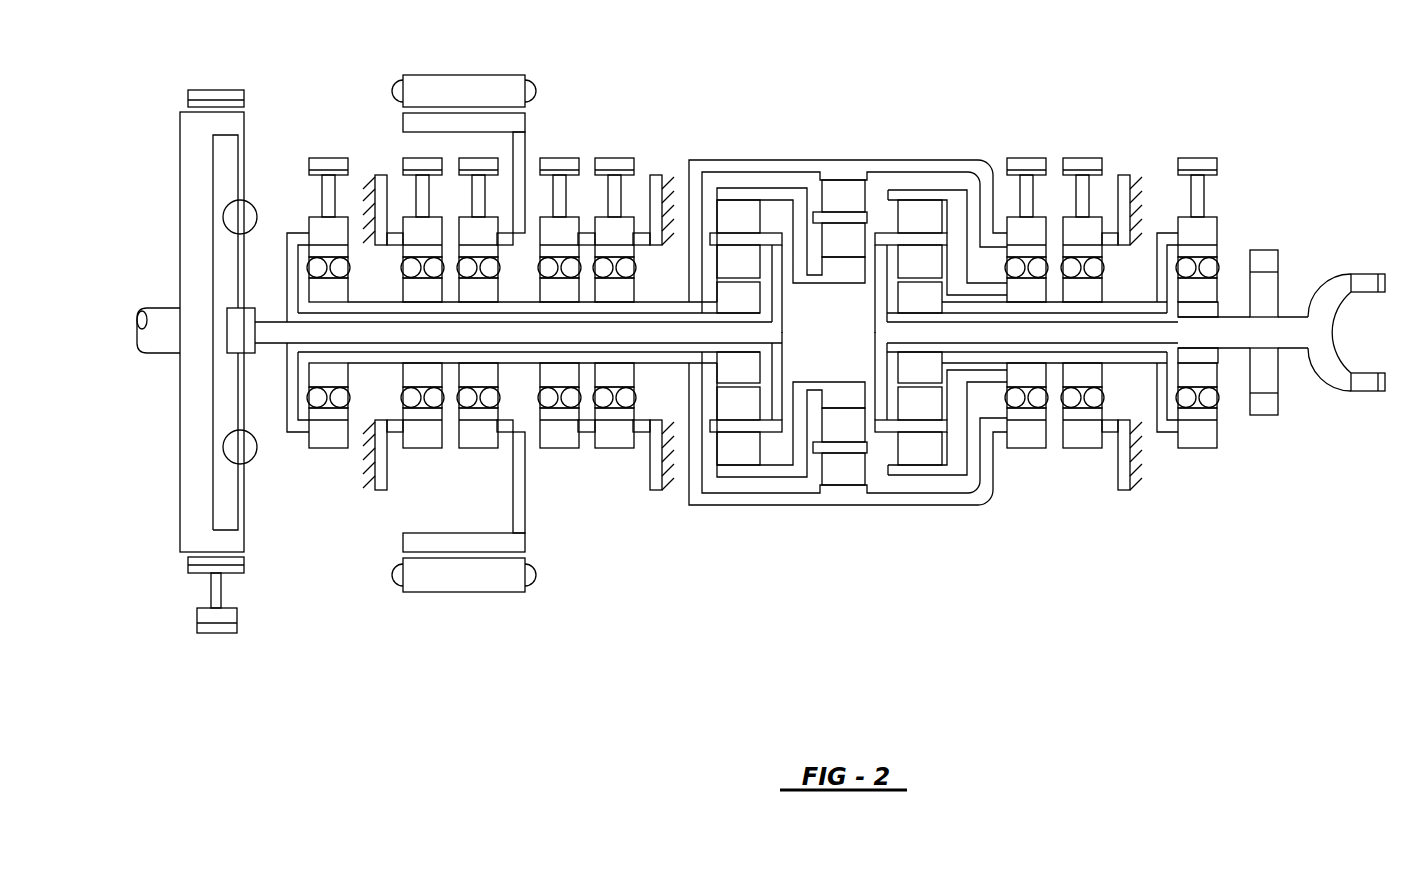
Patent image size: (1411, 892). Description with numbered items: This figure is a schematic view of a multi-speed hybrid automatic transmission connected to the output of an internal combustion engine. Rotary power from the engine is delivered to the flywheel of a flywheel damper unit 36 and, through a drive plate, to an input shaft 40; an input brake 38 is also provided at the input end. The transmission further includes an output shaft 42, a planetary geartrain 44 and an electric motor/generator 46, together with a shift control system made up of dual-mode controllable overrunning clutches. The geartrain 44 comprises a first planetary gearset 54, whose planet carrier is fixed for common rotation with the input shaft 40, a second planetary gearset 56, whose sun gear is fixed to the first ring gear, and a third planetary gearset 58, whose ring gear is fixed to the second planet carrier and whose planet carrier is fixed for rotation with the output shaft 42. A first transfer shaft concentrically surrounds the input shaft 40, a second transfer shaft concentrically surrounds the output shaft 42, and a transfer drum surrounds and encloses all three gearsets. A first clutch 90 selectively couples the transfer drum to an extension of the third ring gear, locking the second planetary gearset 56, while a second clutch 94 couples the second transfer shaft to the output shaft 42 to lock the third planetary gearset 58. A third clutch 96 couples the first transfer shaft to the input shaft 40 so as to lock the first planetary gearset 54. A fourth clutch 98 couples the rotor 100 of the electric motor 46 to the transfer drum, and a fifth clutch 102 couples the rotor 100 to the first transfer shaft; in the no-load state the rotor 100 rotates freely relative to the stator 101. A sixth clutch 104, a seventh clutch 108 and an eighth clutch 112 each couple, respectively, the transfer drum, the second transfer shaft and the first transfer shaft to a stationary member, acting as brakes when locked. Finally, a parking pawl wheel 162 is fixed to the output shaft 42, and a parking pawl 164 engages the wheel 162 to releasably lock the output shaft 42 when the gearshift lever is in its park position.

The flywheel damper unit 36 is at (178, 142).
The input brake 38 is at (232, 84).
The input shaft 40 is at (267, 334).
The output shaft 42 is at (1292, 326).
The planetary geartrain 44 is at (864, 142).
The electric motor/generator 46 is at (478, 68).
The first planetary gearset 54 is at (718, 188).
The second planetary gearset 56 is at (818, 486).
The third planetary gearset 58 is at (950, 222).
The first clutch 90 is at (1042, 206).
The second clutch 94 is at (1222, 212).
The third clutch 96 is at (296, 214).
The fourth clutch 98 is at (565, 214).
The rotor 100 is at (460, 545).
The stator 101 is at (420, 76).
The fifth clutch 102 is at (495, 204).
The sixth clutch 104 is at (636, 200).
The seventh clutch 108 is at (1108, 194).
The eighth clutch 112 is at (393, 184).
The parking pawl wheel 162 is at (1272, 378).
The parking pawl 164 is at (1265, 264).